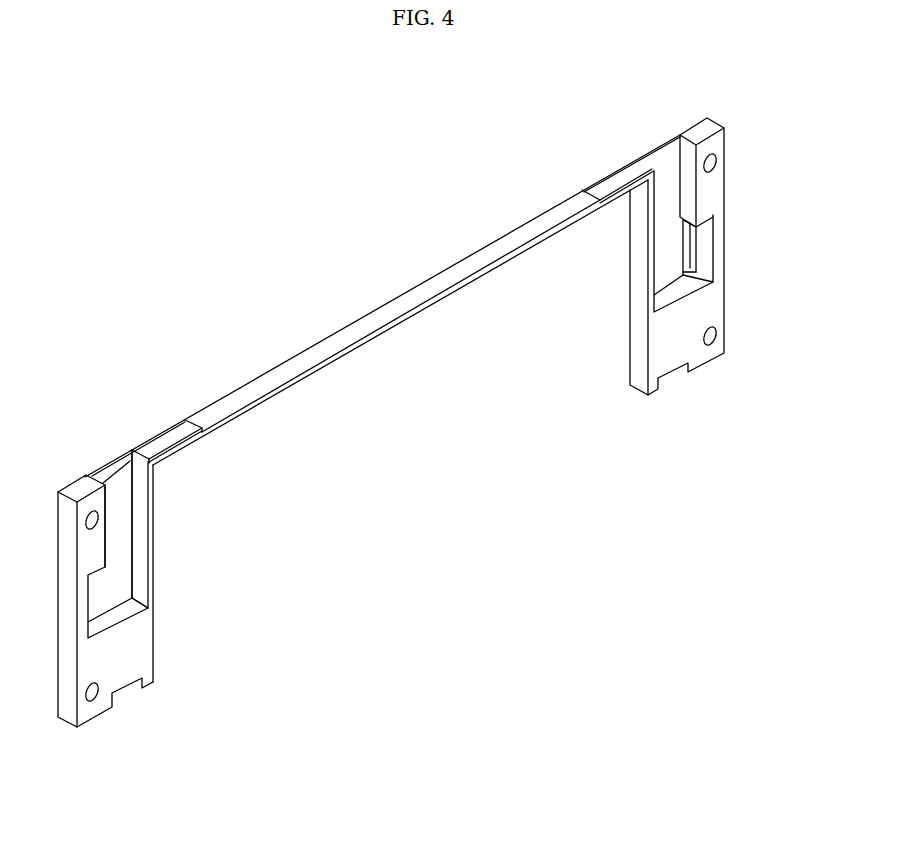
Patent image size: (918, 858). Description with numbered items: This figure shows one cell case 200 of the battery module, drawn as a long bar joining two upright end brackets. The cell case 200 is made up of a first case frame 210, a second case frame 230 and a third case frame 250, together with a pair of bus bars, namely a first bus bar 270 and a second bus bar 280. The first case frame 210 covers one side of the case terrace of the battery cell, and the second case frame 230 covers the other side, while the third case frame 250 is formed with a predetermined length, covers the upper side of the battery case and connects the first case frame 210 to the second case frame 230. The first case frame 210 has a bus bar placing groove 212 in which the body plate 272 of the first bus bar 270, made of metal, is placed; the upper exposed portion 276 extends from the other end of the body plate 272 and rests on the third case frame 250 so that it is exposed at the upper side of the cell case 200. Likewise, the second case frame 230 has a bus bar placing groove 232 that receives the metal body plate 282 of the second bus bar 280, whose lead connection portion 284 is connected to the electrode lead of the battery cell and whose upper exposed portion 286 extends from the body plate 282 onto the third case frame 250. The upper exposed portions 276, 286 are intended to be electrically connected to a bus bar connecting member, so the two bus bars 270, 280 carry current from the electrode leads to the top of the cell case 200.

The cell case 200 is at (268, 166).
The third case frame 250 is at (377, 318).
The first bus bar 270 is at (93, 409).
The first case frame 210 is at (117, 665).
The bus bar placing groove 212 is at (137, 575).
The body plate 272 is at (122, 522).
The upper exposed portion 276 is at (167, 438).
The second bus bar 280 is at (618, 108).
The second case frame 230 is at (677, 345).
The bus bar placing groove 232 is at (677, 290).
The body plate 282 is at (672, 198).
The lead connection portion 284 is at (687, 248).
The upper exposed portion 286 is at (610, 185).